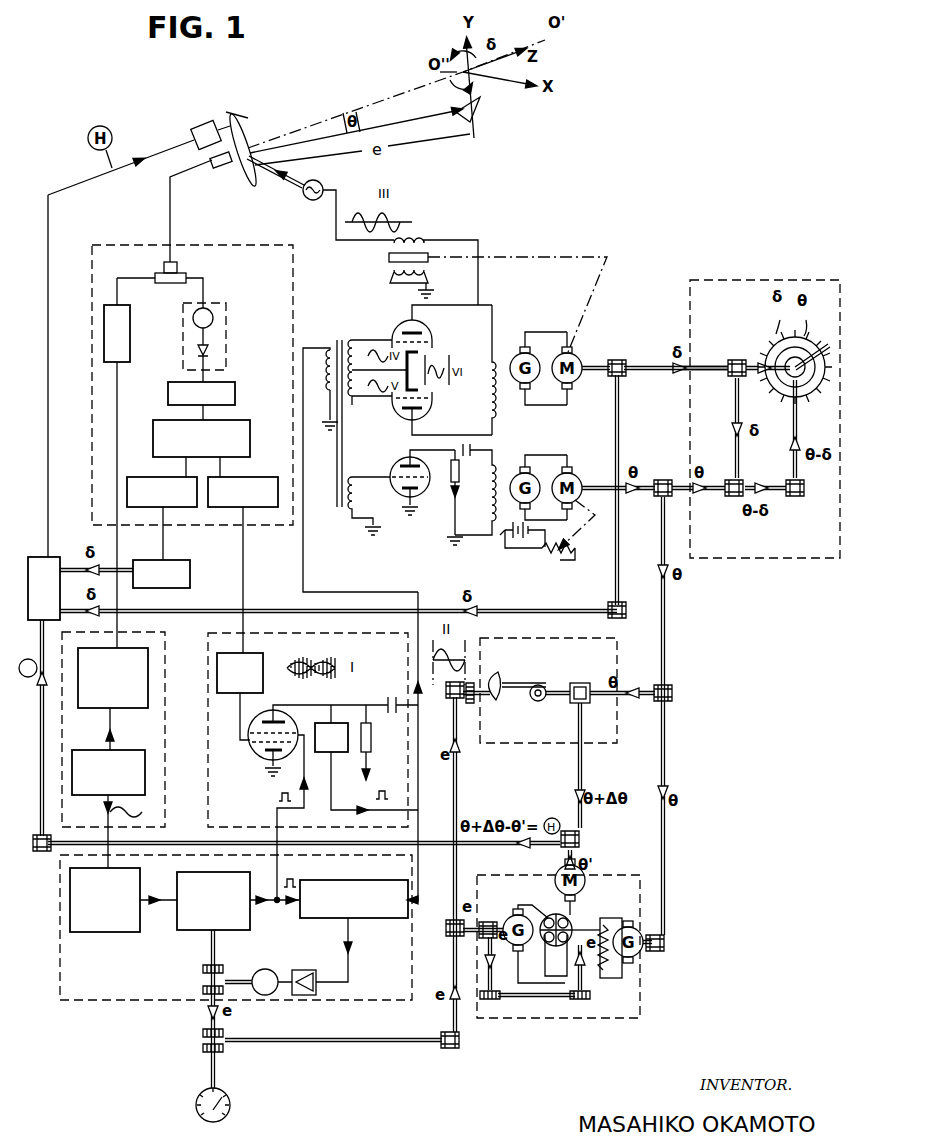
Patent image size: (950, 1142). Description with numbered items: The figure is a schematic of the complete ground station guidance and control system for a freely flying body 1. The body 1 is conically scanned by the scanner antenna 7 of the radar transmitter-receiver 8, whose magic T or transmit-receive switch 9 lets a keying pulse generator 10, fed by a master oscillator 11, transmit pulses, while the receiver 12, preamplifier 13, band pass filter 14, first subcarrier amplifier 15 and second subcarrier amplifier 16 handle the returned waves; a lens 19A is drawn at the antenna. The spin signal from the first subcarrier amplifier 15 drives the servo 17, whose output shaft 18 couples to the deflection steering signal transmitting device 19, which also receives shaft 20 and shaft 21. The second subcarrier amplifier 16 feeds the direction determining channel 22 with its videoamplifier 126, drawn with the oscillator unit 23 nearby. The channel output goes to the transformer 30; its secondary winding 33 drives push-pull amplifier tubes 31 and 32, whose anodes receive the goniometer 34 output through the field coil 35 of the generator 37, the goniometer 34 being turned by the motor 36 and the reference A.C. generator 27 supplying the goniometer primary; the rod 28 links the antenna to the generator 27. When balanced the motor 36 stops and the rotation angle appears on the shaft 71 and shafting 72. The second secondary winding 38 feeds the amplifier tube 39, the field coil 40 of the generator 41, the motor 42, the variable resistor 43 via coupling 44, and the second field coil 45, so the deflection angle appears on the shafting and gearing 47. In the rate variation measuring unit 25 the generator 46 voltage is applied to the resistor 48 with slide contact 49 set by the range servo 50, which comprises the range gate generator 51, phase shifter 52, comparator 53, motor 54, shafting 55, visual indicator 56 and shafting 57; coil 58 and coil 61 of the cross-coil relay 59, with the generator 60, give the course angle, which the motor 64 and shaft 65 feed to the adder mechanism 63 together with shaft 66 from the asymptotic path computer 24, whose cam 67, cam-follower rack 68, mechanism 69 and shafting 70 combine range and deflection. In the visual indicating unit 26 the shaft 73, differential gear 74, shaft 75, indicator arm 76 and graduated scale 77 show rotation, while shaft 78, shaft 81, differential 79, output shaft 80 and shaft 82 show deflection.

The flying body 1 is at (482, 106).
The scanner antenna 7 is at (237, 182).
The radar transmitter-receiver 8 is at (282, 281).
The transmit-receive switch 9 is at (172, 284).
The keying pulse generator 10 is at (148, 669).
The master oscillator 11 is at (124, 752).
The receiver 12 is at (227, 316).
The preamplifier 13 is at (235, 397).
The band pass filter 14 is at (250, 432).
The first subcarrier amplifier 15 is at (150, 476).
The second subcarrier amplifier 16 is at (256, 478).
The servo 17 is at (191, 563).
The output shaft 18 is at (121, 565).
The deflection steering signal transmitting device 19 is at (50, 556).
The lens 19A is at (236, 110).
The shaft 20 is at (38, 724).
The shaft 21 is at (220, 608).
The direction determining channel 22 is at (397, 757).
The oscillator unit 23 is at (152, 792).
The asymptotic path computer 24 is at (616, 654).
The rate variation measuring unit 25 is at (600, 1021).
The visual indicating unit 26 is at (812, 558).
The reference A.C. generator 27 is at (323, 186).
The drive rod 28 is at (285, 187).
The transformer 30 is at (334, 342).
The amplifier tube 31 is at (402, 320).
The amplifier tube 32 is at (434, 410).
The secondary winding 33 is at (354, 406).
The goniometer 34 is at (410, 242).
The field coil 35 is at (486, 387).
The motor 36 is at (576, 384).
The generator 37 is at (520, 346).
The second secondary winding 38 is at (362, 476).
The amplifier tube 39 is at (425, 522).
The field coil 40 is at (492, 488).
The generator 41 is at (520, 466).
The motor 42 is at (574, 466).
The variable resistor 43 is at (564, 554).
The coupling 44 is at (575, 541).
The second field coil 45 is at (500, 544).
The generator 46 is at (638, 952).
The shafting and gearing 47 is at (592, 486).
The resistor 48 is at (606, 916).
The slide contact 49 is at (606, 920).
The range servo 50 is at (102, 998).
The range gate generator 51 is at (116, 944).
The phase shifter 52 is at (194, 939).
The comparator 53 is at (362, 918).
The motor 54 is at (270, 970).
The shafting and gearing mechanism 55 is at (194, 1042).
The visual indicator 56 is at (230, 1120).
The shafting and gearing mechanism 57 is at (459, 820).
The coil 58 is at (532, 946).
The cross-coil relay 59 is at (556, 910).
The generator 60 is at (510, 908).
The coil 61 is at (555, 955).
The adder mechanism 63 is at (582, 844).
The motor 64 is at (587, 875).
The shaft 65 is at (561, 860).
The shaft 66 is at (584, 773).
The formed cam 67 is at (494, 702).
The cam-follower rack 68 is at (538, 678).
The shaft and gear mechanism 69 is at (542, 702).
The shafting 70 is at (594, 704).
The shaft 71 is at (597, 360).
The shaft 72 is at (623, 414).
The shaft 73 is at (706, 361).
The differential gear 74 is at (736, 356).
The shaft 75 is at (742, 397).
The indicator arm 76 is at (814, 344).
The graduated scale 77 is at (806, 370).
The shaft 78 is at (718, 496).
The differential 79 is at (734, 498).
The output shaft 80 is at (761, 480).
The shaft 81 is at (734, 408).
The shaft 82 is at (800, 428).
The videoamplifier 126 is at (268, 656).